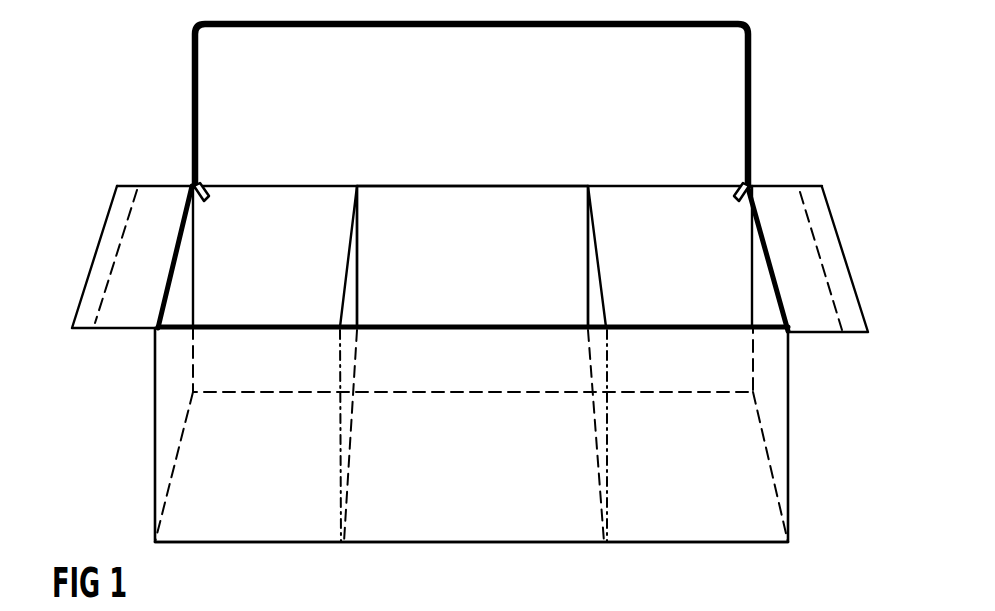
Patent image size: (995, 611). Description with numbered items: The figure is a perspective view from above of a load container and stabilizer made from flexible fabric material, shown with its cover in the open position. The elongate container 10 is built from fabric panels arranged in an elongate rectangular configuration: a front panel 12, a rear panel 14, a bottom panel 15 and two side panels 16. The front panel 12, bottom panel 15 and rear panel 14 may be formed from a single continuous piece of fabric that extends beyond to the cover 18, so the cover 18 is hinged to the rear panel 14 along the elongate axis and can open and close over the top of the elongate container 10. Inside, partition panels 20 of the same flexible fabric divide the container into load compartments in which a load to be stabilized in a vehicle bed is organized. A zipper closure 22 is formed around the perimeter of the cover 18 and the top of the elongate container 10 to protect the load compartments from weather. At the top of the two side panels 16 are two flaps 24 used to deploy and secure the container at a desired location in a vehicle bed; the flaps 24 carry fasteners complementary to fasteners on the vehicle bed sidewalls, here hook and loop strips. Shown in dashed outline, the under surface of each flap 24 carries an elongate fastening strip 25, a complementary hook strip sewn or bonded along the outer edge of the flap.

The elongate container 10 is at (74, 80).
The front panel 12 is at (723, 533).
The rear panel 14 is at (472, 255).
The bottom panel 15 is at (472, 506).
The side panels 16 is at (178, 295).
The cover 18 is at (481, 116).
The partition panels 20 is at (352, 232).
The zipper closure 22 is at (192, 57).
The flaps 24 is at (157, 187).
The fastening strip 25 is at (120, 220).